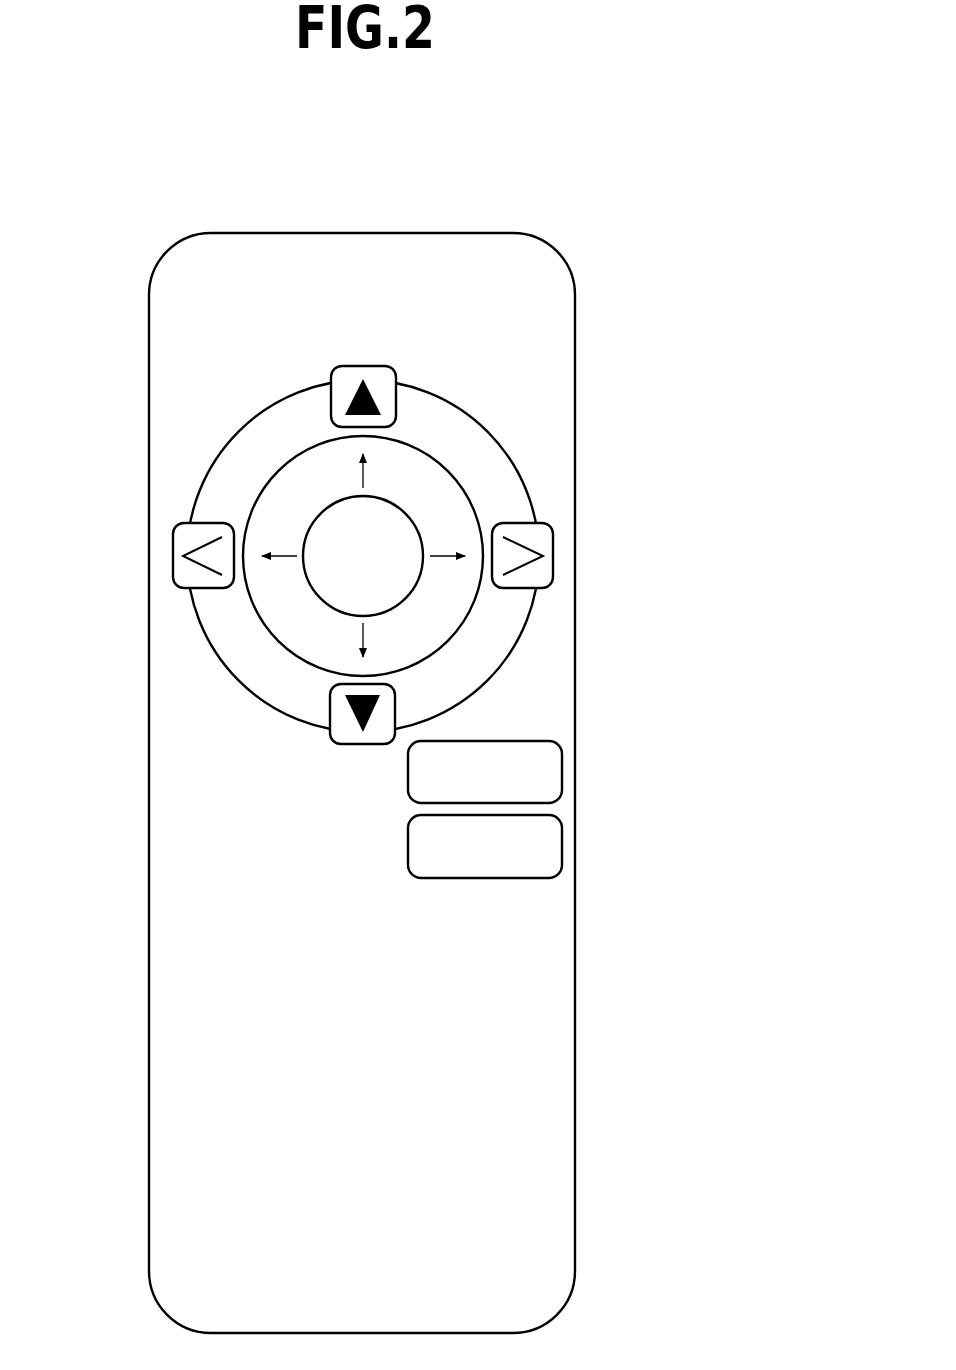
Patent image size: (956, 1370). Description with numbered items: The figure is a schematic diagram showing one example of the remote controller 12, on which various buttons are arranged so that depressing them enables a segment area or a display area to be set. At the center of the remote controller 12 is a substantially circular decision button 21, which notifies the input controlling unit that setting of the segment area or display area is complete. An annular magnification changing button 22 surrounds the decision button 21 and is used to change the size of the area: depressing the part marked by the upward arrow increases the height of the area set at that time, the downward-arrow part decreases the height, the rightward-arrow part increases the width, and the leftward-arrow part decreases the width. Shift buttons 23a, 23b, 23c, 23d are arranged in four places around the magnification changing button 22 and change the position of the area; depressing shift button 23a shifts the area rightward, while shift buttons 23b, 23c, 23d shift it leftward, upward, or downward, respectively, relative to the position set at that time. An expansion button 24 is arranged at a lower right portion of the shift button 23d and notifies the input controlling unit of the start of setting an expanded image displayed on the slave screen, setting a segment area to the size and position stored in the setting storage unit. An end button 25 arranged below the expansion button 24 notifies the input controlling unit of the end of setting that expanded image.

The remote controller 12 is at (586, 206).
The decision button 21 is at (413, 528).
The magnification changing button 22 is at (427, 610).
The shift button 23a is at (540, 535).
The shift button 23b is at (187, 540).
The shift button 23c is at (372, 376).
The shift button 23d is at (334, 736).
The expansion button 24 is at (547, 792).
The end button 25 is at (547, 864).